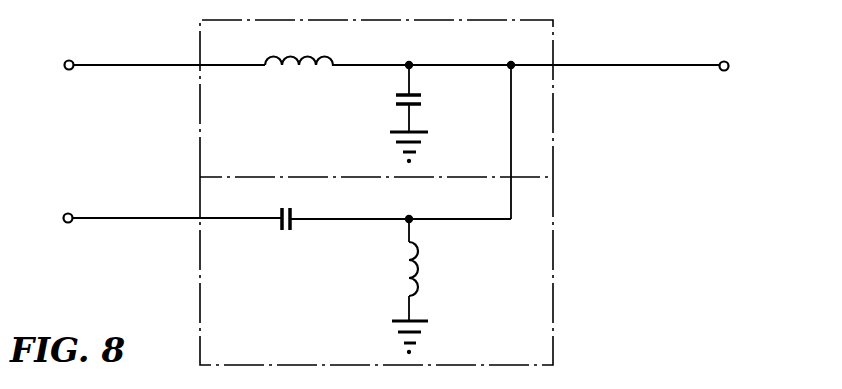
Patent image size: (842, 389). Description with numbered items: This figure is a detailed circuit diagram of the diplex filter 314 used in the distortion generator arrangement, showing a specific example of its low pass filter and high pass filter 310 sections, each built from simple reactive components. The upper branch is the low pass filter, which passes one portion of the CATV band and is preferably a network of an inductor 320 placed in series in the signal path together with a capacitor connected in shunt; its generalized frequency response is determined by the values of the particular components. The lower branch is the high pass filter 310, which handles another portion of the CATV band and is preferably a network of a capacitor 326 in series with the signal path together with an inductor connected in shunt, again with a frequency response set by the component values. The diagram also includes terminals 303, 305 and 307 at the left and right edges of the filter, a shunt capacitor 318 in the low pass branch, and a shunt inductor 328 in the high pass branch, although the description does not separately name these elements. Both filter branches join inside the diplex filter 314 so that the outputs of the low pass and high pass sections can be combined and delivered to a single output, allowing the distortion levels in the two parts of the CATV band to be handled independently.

The first input terminal 303 is at (127, 63).
The second input terminal 305 is at (118, 217).
The output terminal 307 is at (647, 65).
The high pass filter 310 is at (553, 275).
The diplex filter 314 is at (556, 135).
The shunt capacitor 318 is at (420, 106).
The inductor 320 is at (337, 63).
The capacitor 326 is at (292, 217).
The shunt inductor 328 is at (443, 246).